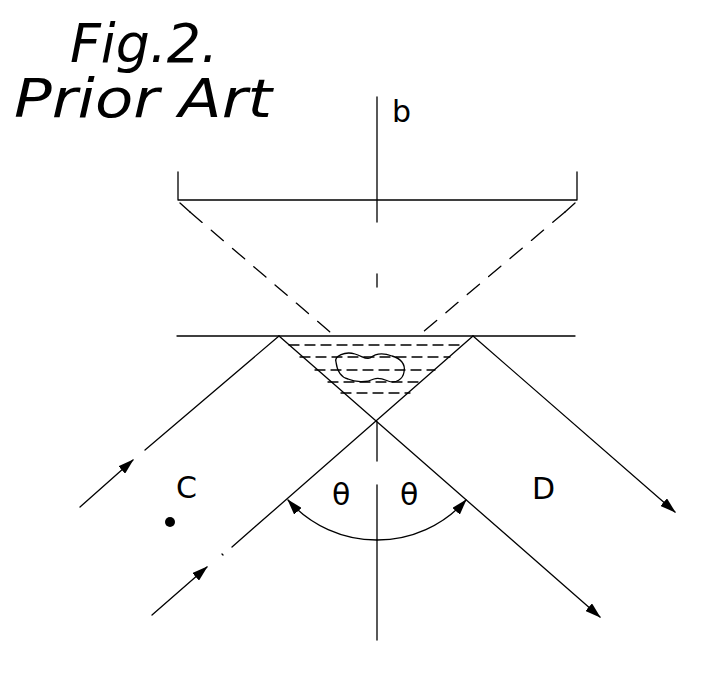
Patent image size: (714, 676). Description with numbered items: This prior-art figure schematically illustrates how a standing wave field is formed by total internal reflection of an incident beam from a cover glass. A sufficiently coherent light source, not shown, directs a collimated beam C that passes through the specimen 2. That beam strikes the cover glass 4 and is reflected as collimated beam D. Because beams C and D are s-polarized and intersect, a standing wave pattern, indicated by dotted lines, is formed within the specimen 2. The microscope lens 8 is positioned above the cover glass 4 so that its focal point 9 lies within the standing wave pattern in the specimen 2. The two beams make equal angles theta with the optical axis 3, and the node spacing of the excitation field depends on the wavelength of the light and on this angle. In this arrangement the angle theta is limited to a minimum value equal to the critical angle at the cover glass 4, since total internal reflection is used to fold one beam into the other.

The specimen 2 is at (422, 383).
The optical axis 3 is at (377, 587).
The cover glass 4 is at (218, 335).
The microscope lens 8 is at (333, 200).
The focal point 9 is at (357, 403).